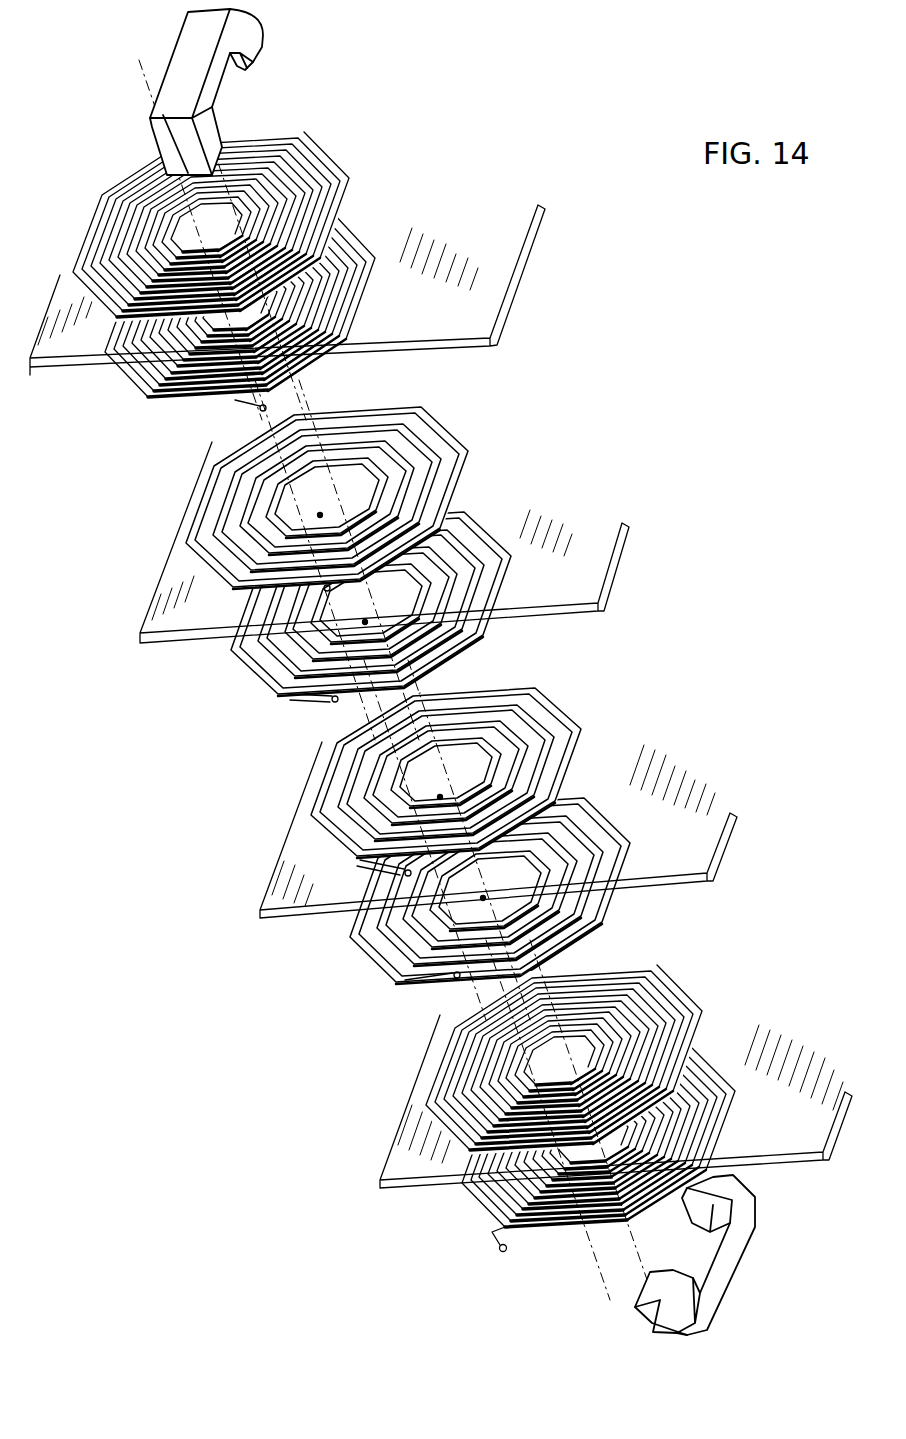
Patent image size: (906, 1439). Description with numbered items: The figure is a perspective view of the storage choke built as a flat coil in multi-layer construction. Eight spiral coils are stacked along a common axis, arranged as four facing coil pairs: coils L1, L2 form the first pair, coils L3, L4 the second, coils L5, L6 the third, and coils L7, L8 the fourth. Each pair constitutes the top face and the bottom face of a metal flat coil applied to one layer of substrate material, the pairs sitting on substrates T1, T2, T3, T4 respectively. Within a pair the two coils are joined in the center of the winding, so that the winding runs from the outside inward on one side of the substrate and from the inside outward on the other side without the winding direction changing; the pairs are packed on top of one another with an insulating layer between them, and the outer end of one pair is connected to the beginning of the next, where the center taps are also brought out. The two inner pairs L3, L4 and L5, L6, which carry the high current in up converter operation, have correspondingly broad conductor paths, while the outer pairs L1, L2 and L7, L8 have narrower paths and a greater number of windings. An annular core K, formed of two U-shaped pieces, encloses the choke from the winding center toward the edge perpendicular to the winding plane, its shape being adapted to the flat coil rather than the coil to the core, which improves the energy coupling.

The coil L1 is at (336, 144).
The coil L2 is at (365, 230).
The coil L3 is at (464, 430).
The coil L4 is at (500, 523).
The coil L5 is at (571, 704).
The coil L6 is at (602, 781).
The coil L7 is at (690, 977).
The coil L8 is at (716, 1050).
The substrate material T1 is at (526, 280).
The substrate material T2 is at (624, 562).
The substrate material T3 is at (734, 856).
The substrate material T4 is at (400, 1109).
The annular core K is at (144, 101).